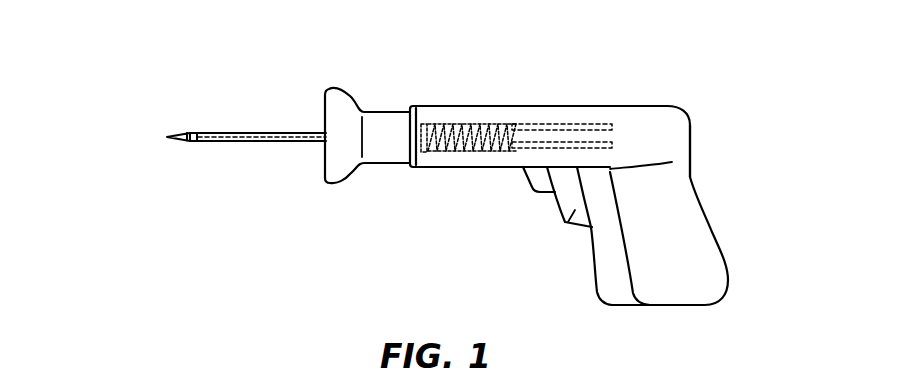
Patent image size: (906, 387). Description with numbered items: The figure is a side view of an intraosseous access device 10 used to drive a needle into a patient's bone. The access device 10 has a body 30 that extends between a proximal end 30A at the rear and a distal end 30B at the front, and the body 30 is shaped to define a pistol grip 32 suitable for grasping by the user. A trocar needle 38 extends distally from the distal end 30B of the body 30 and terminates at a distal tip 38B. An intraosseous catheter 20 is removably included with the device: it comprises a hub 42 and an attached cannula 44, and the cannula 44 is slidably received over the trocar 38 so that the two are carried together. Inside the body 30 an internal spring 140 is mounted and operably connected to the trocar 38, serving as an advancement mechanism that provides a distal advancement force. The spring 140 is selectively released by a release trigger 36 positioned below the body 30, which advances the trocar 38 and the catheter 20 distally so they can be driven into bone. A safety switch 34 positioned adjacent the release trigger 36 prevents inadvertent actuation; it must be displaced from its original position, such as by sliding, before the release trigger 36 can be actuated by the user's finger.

The intraosseous access device 10 is at (542, 80).
The intraosseous catheter 20 is at (252, 178).
The body 30 is at (608, 112).
The proximal end 30A is at (690, 122).
The distal end 30B is at (410, 118).
The pistol grip 32 is at (682, 238).
The safety switch 34 is at (529, 180).
The release trigger 36 is at (565, 223).
The trocar needle 38 is at (212, 143).
The distal tip 38B is at (170, 137).
The hub 42 is at (332, 112).
The cannula 44 is at (203, 133).
The spring 140 is at (447, 120).